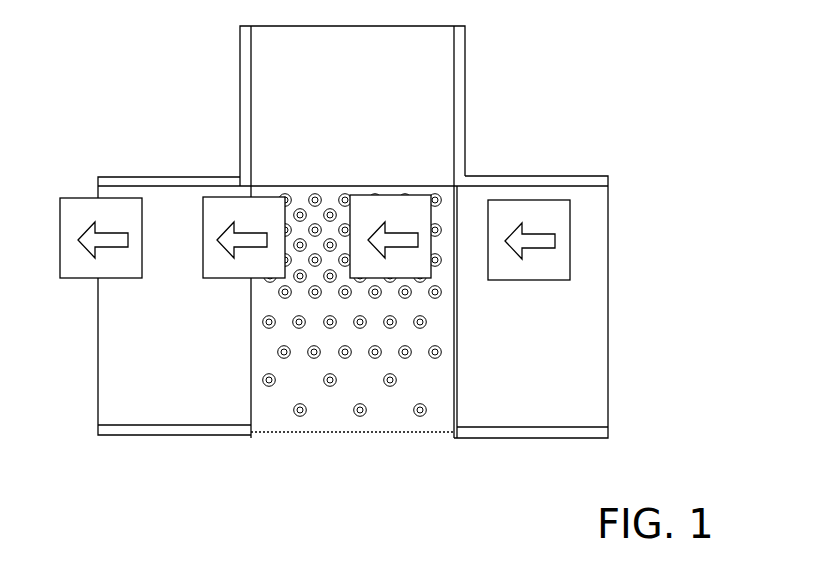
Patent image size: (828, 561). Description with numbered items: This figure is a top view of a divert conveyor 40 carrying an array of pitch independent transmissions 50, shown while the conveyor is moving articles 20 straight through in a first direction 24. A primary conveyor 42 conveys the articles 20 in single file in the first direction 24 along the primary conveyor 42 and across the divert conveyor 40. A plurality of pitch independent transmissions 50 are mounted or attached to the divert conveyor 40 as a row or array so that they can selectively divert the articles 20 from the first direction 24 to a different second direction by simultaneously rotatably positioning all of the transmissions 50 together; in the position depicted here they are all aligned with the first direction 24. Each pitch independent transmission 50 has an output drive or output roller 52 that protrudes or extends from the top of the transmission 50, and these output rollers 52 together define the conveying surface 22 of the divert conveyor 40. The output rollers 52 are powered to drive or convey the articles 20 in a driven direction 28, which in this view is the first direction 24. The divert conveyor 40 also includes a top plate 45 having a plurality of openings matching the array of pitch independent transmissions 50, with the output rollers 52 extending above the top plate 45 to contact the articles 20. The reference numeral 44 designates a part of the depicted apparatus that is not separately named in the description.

The articles 20 is at (584, 211).
The conveying surface 22 is at (333, 438).
The first direction 24 is at (540, 252).
The driven direction 28 is at (117, 252).
The divert conveyor 40 is at (425, 432).
The primary conveyor 42 is at (630, 380).
The housing 44 is at (518, 119).
The top plate 45 is at (257, 412).
The pitch independent transmission 50 is at (294, 415).
The output roller 52 is at (367, 413).